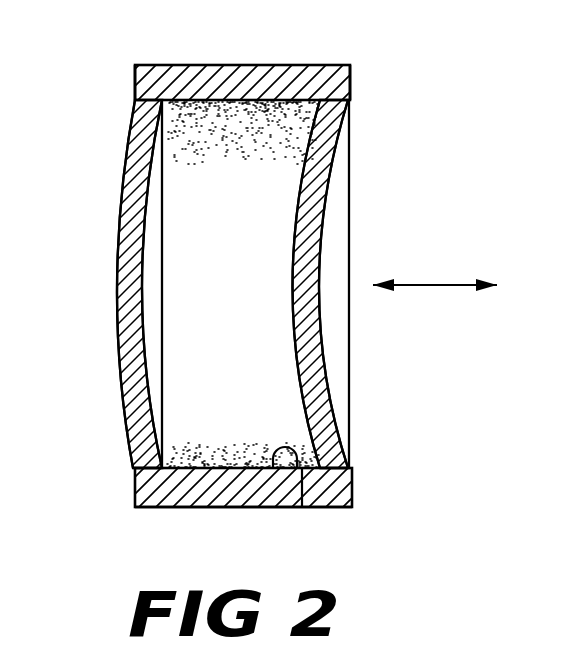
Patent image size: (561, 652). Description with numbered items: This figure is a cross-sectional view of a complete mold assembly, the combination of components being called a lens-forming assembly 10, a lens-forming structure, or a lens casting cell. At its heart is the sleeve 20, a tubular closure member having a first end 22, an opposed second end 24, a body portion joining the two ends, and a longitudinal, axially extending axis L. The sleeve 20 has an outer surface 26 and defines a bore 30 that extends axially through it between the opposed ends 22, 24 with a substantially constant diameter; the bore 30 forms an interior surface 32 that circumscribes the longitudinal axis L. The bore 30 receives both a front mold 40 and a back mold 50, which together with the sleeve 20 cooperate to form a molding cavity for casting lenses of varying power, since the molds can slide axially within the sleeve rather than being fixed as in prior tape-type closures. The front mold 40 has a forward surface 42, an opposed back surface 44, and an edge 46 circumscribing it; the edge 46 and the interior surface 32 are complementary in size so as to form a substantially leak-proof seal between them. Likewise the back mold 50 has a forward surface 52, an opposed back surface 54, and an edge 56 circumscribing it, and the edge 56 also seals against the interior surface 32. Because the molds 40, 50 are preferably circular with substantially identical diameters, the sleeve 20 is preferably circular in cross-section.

The lens-forming assembly 10 is at (156, 40).
The sleeve 20 is at (250, 82).
The first end 22 is at (135, 84).
The second end 24 is at (351, 82).
The outer surface 26 is at (227, 508).
The bore 30 is at (246, 296).
The interior surface 32 is at (302, 508).
The front mold 40 is at (130, 348).
The forward surface 42 is at (118, 243).
The back surface 44 is at (143, 200).
The edge 46 is at (137, 476).
The back mold 50 is at (317, 173).
The forward surface 52 is at (295, 360).
The back surface 54 is at (320, 347).
The edge 56 is at (352, 470).
The longitudinal axis L is at (436, 283).